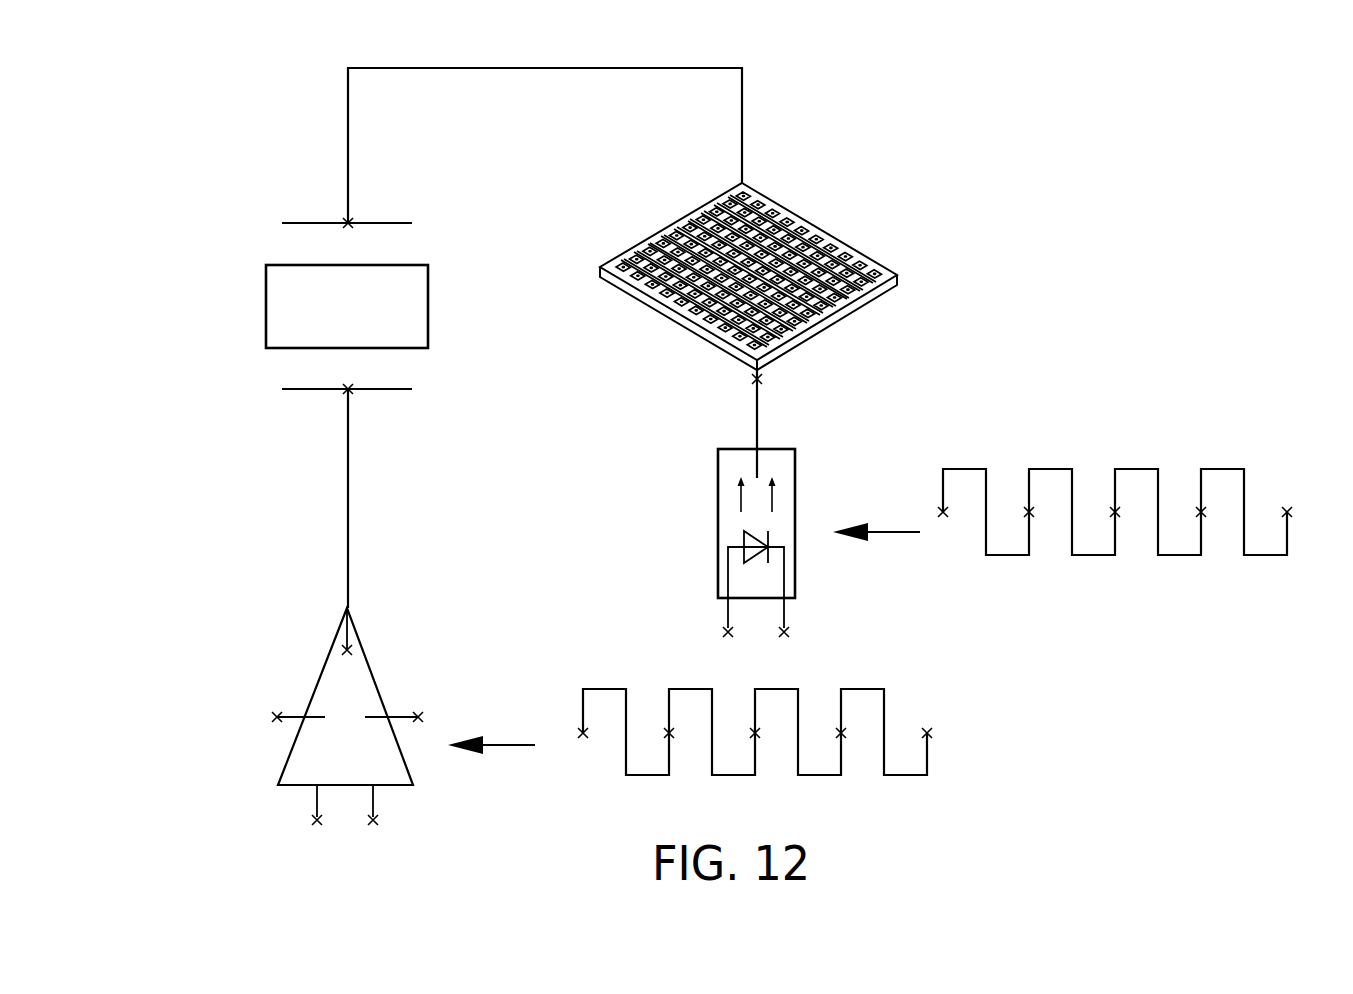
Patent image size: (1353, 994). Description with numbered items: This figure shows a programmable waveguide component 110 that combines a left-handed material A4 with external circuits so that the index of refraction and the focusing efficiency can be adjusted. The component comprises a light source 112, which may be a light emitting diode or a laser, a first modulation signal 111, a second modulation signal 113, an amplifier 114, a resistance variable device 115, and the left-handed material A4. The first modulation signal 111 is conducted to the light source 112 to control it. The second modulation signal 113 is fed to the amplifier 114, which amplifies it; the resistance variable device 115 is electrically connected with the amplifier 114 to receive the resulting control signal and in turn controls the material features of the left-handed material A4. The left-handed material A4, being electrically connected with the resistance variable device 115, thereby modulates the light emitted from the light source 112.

The programmable waveguide component 110 is at (188, 123).
The first modulation signal 111 is at (1244, 469).
The light source 112 is at (795, 461).
The second modulation signal 113 is at (884, 689).
The amplifier 114 is at (290, 750).
The resistance variable device 115 is at (266, 303).
The left-handed material A4 is at (897, 275).